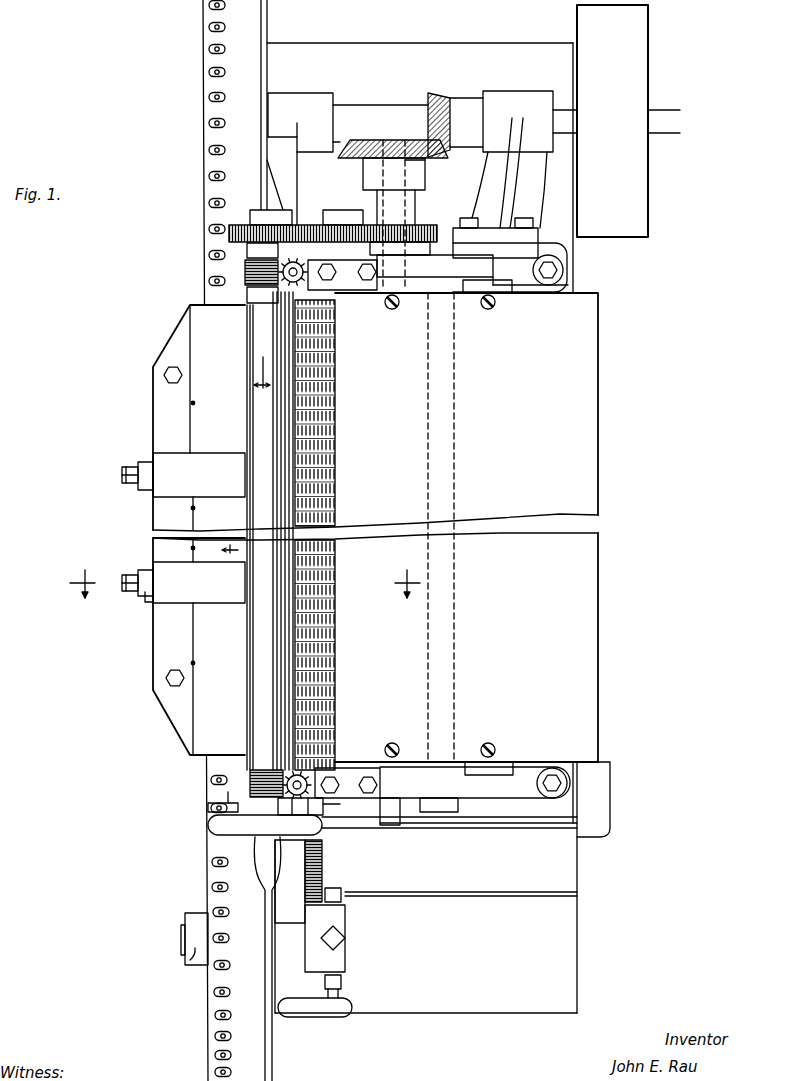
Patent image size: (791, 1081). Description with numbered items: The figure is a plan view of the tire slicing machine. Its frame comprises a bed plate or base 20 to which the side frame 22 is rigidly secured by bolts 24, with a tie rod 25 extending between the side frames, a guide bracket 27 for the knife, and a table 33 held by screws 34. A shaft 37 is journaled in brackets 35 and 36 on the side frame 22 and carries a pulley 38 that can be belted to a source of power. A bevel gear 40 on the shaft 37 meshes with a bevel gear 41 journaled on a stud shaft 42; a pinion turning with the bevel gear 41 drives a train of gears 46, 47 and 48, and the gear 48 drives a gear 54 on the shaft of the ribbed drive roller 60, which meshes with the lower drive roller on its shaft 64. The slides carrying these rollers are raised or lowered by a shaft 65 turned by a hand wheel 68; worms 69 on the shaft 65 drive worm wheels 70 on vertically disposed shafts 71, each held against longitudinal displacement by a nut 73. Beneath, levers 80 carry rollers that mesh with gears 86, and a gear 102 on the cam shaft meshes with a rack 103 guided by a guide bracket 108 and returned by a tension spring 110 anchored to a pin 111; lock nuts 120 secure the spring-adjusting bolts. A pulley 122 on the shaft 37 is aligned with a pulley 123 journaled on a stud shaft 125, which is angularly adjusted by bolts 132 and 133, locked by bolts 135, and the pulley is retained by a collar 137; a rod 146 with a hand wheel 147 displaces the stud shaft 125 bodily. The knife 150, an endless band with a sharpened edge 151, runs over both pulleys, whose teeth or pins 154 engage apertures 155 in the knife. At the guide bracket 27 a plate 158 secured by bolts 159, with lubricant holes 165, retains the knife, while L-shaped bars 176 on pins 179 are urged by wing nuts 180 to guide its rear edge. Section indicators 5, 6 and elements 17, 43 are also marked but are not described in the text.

The section line 5- 5 is at (242, 584).
The section line 6- 6 is at (256, 362).
The upper carriage block 17 is at (153, 460).
The bed plate 20 is at (348, 50).
The side frame 22 is at (445, 265).
The bolts 24 is at (548, 280).
The tie rod 25 is at (452, 726).
The guide bracket 27 is at (153, 628).
The table 33 is at (590, 450).
The screws 34 is at (392, 309).
The bracket 35 is at (287, 100).
The bracket 36 is at (497, 96).
The shaft 37 is at (662, 110).
The pulley 38 is at (643, 68).
The bevel gear 40 is at (430, 96).
The bevel gear 41 is at (372, 140).
The stud shaft 42 is at (338, 222).
The collar 43 is at (438, 175).
The gear 46 is at (424, 252).
The gear 47 is at (400, 243).
The gear 48 is at (405, 176).
The gear 54 is at (229, 238).
The ribbed drive roller 60 is at (277, 345).
The shaft 64 is at (355, 290).
The shaft 65 is at (258, 370).
The hand wheel 68 is at (208, 828).
The worms 69 is at (245, 272).
The worm wheels 70 is at (330, 760).
The vertically disposed shafts 71 is at (327, 282).
The nut 73 is at (300, 264).
The levers 80 is at (325, 462).
The gears 86 is at (325, 428).
The gear 102 is at (345, 820).
The rack 103 is at (360, 825).
The guide bracket 108 is at (372, 828).
The tension spring 110 is at (385, 820).
The pin 111 is at (385, 808).
The lock nuts 120 is at (295, 866).
The pulley 122 is at (203, 56).
The pulley 123 is at (213, 1036).
The stud shaft 125 is at (185, 944).
The bolt 132 is at (342, 982).
The bolt 133 is at (342, 898).
The bolts 135 is at (345, 938).
The collar 137 is at (192, 965).
The rod 146 is at (325, 875).
The hand wheel 147 is at (345, 1006).
The knife 150 is at (213, 1010).
The sharpened edge 151 is at (273, 1068).
The teeth or pins 154 is at (212, 910).
The apertures 155 is at (208, 98).
The plate 158 is at (200, 727).
The bolts 159 is at (164, 373).
The holes 165 is at (193, 403).
The L-shaped bars 176 is at (148, 598).
The pin 179 is at (124, 473).
The wing nut 180 is at (124, 484).